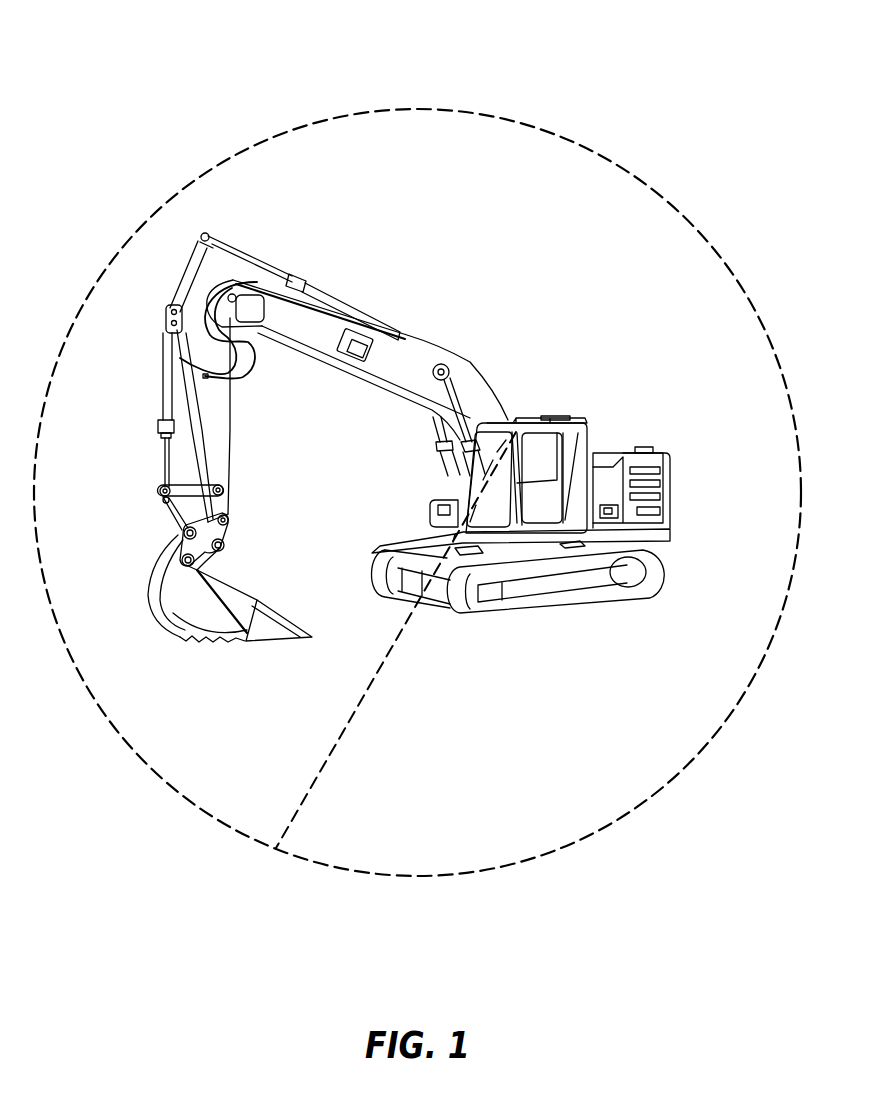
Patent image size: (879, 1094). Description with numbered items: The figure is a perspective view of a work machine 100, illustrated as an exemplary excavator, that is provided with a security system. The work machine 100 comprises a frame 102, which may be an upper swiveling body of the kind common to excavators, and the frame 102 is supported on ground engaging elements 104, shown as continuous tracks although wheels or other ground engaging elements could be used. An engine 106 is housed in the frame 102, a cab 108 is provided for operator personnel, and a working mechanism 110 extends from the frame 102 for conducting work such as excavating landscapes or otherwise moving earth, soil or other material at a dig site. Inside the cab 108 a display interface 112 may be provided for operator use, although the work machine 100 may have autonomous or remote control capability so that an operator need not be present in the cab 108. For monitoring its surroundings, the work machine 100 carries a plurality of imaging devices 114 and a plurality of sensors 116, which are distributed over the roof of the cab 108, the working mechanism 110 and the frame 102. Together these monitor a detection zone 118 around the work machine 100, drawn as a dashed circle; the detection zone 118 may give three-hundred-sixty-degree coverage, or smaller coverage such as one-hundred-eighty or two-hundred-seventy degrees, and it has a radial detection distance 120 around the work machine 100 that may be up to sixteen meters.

The work machine 100 is at (583, 78).
The frame 102 is at (423, 547).
The ground engaging elements 104 is at (530, 585).
The engine 106 is at (442, 600).
The cab 108 is at (555, 452).
The working mechanism 110 is at (313, 328).
The display interface 112 is at (543, 462).
The imaging devices 114 is at (530, 420).
The sensors 116 is at (357, 346).
The detection zone 118 is at (748, 299).
The radial detection distance 120 is at (307, 798).